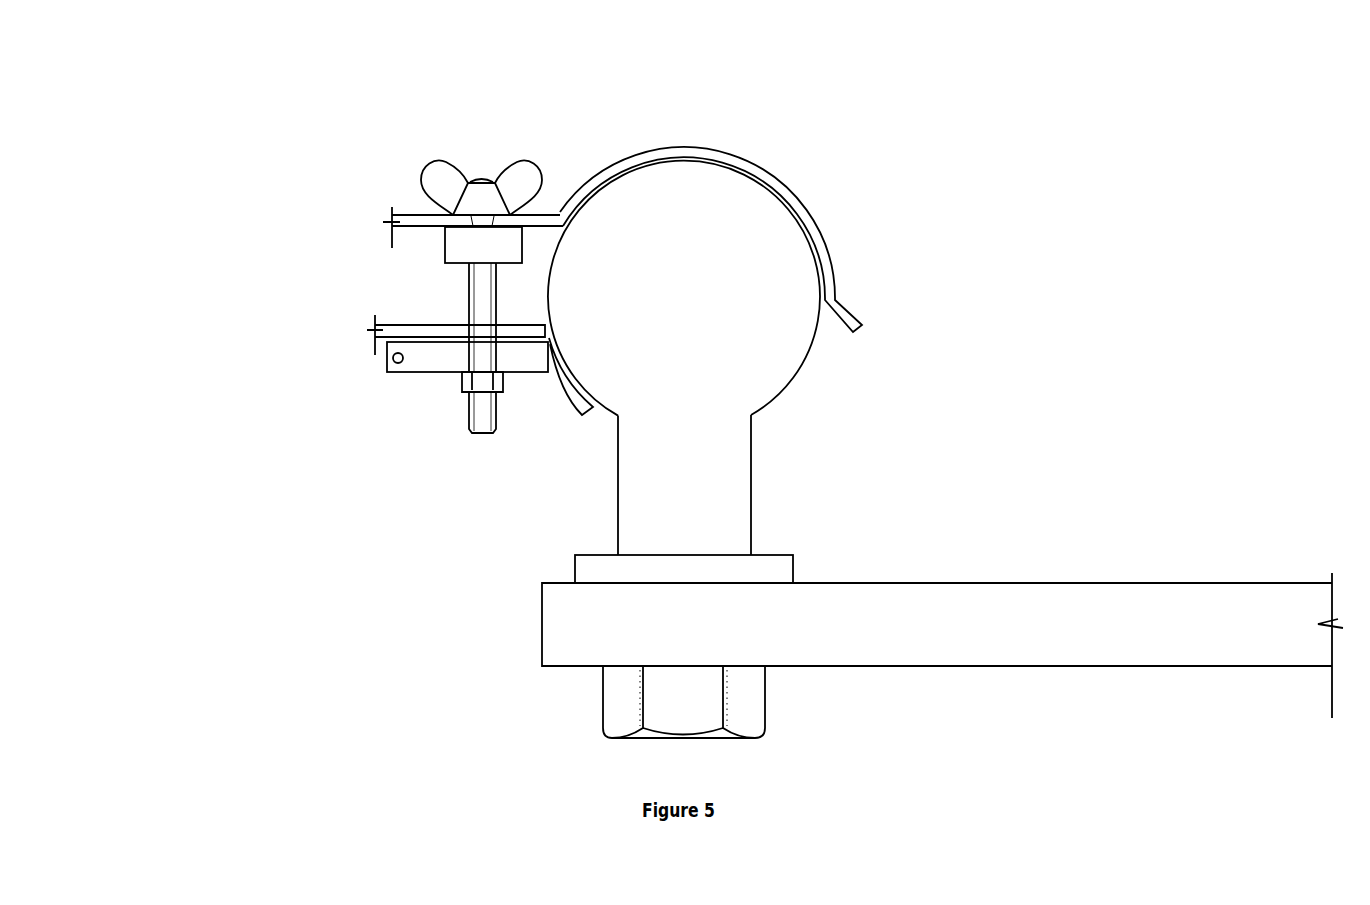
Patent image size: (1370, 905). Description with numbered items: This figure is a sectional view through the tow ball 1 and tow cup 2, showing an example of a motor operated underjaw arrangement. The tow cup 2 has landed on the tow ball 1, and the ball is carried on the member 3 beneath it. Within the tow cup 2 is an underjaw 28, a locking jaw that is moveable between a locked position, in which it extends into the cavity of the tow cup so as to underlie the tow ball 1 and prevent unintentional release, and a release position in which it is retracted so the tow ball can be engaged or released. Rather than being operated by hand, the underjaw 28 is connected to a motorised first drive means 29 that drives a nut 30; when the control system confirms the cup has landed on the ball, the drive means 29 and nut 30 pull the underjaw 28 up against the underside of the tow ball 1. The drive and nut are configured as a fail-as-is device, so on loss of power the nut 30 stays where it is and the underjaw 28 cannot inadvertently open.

The tow ball 1 is at (758, 320).
The tow cup 2 is at (733, 153).
The tow bar 3 is at (903, 625).
The underjaw 28 is at (570, 400).
The motorised first drive means 29 is at (460, 247).
The nut 30 is at (487, 202).